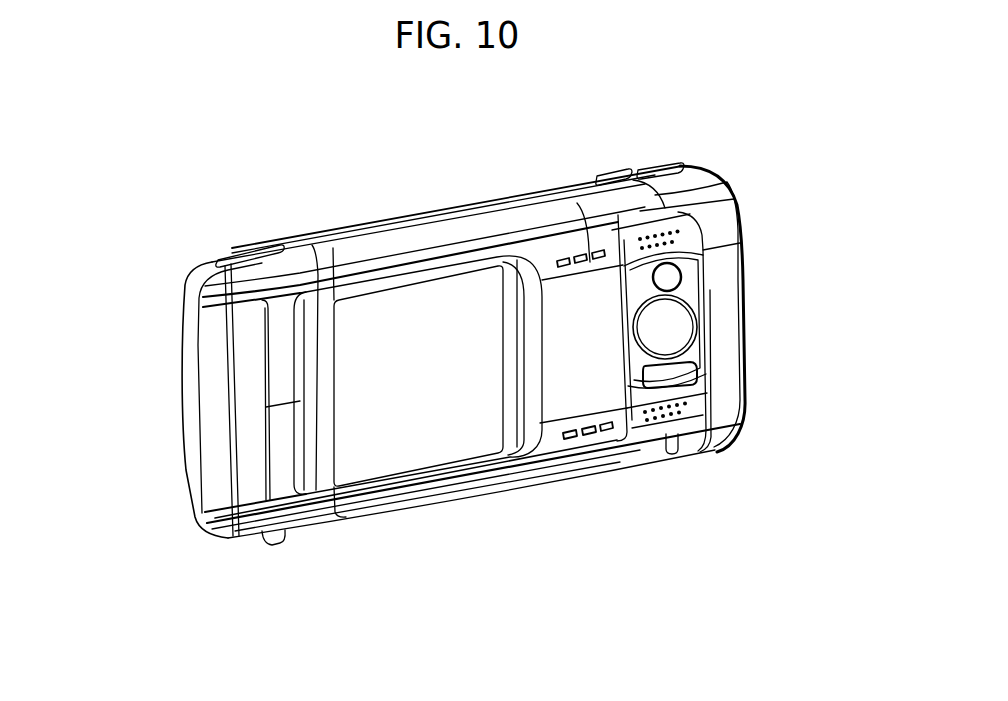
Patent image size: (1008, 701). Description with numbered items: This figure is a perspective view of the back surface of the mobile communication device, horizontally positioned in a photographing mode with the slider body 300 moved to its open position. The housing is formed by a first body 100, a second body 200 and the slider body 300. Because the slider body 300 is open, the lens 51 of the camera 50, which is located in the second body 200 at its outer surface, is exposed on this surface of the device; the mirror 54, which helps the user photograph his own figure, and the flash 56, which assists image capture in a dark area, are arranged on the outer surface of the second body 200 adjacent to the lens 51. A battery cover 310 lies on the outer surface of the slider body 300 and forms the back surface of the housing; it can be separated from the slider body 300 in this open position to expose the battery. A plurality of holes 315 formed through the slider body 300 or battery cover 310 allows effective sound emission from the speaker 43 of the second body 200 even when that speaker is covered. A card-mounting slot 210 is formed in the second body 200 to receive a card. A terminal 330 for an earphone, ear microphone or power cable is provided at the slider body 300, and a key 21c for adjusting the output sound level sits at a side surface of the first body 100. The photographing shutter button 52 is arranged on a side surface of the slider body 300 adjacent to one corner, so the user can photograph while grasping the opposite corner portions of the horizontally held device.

The first body 100 is at (323, 229).
The second body 200 is at (706, 453).
The slider body 300 is at (185, 488).
The battery cover 310 is at (417, 304).
The holes 315 is at (592, 436).
The terminal 330 is at (268, 546).
The photographing shutter button 52 is at (251, 254).
The key for adjusting the level of an output sound 21c is at (512, 197).
The card-mounting slot 210 is at (606, 173).
The camera 50 is at (745, 323).
The lens 51 is at (680, 329).
The mirror 54 is at (668, 278).
The flash 56 is at (726, 380).
The speaker 43 is at (653, 418).